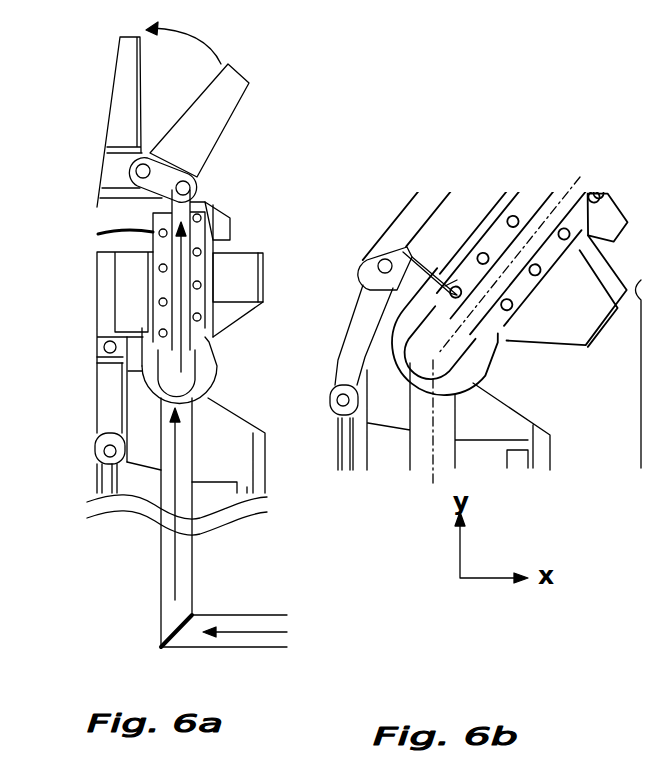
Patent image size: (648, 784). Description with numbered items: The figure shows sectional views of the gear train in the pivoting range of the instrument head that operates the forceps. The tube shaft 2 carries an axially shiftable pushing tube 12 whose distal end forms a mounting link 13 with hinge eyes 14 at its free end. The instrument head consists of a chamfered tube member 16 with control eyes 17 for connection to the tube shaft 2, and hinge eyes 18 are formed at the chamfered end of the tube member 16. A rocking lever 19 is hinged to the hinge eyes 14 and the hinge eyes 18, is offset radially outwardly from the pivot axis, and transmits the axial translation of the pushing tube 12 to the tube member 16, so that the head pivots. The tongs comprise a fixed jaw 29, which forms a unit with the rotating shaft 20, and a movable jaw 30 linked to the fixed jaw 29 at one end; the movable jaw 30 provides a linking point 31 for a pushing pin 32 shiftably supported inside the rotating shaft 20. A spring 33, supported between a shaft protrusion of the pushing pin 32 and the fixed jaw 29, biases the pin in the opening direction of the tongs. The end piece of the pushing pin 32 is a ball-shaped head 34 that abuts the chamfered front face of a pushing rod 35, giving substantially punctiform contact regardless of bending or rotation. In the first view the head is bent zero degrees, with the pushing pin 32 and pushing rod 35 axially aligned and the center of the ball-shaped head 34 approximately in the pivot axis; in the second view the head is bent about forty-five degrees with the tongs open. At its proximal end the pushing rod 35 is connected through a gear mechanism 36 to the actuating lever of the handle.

In FIG. 6A, the tube shaft 2 is at (265, 468).
In FIG. 6A, the pushing tube 12 is at (142, 476).
In FIG. 6B, the mounting link 13 is at (367, 475).
In FIG. 6A, the hinge eyes 14 is at (95, 458).
In FIG. 6B, the hinge eyes 14 is at (332, 400).
In FIG. 6A, the tube member 16 is at (97, 287).
In FIG. 6A, the control eyes 17 is at (215, 380).
In FIG. 6A, the hinge eyes 18 is at (96, 336).
In FIG. 6B, the hinge eyes 18 is at (365, 267).
In FIG. 6A, the rocking lever 19 is at (100, 396).
In FIG. 6B, the rocking lever 19 is at (358, 318).
In FIG. 6A, the rotating shaft 20 is at (213, 282).
In FIG. 6A, the fixed jaw 29 is at (120, 78).
In FIG. 6A, the movable jaw 30 is at (217, 117).
In FIG. 6A, the linking point 31 is at (193, 186).
In FIG. 6A, the pushing pin 32 is at (185, 243).
In FIG. 6A, the spring 33 is at (98, 235).
In FIG. 6A, the ball-shaped head 34 is at (98, 373).
In FIG. 6A, the pushing rod 35 is at (162, 605).
In FIG. 6A, the gear mechanism 36 is at (268, 647).